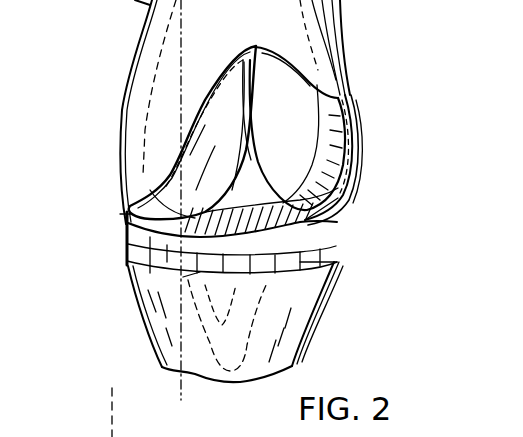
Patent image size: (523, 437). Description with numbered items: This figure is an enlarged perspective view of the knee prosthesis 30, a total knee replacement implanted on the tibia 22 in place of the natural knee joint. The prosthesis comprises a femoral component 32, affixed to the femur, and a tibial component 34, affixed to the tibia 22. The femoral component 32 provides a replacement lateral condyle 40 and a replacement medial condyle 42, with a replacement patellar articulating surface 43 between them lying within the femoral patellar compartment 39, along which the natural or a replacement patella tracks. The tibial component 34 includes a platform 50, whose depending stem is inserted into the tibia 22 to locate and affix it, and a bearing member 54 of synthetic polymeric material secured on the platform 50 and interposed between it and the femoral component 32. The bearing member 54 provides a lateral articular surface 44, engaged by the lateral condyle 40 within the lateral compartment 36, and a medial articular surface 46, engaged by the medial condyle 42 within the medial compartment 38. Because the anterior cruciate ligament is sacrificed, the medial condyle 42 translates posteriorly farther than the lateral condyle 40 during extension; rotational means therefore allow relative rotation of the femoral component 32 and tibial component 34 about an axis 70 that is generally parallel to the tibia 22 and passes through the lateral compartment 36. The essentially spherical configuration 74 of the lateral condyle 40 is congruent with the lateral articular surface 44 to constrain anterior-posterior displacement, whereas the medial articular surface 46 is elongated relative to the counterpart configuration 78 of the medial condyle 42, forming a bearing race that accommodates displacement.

The tibia 22 is at (299, 337).
The knee prosthesis 30 is at (122, 215).
The femoral component 32 is at (204, 128).
The tibial component 34 is at (134, 259).
The lateral compartment 36 is at (125, 230).
The medial compartment 38 is at (302, 260).
The femoral patellar compartment 39 is at (252, 157).
The lateral condyle 40 is at (215, 146).
The medial condyle 42 is at (340, 157).
The patellar articulating surface 43 is at (323, 127).
The lateral articular surface 44 is at (178, 196).
The medial articular surface 46 is at (298, 178).
The platform 50 is at (183, 277).
The bearing member 54 is at (127, 243).
The axis 70 is at (112, 428).
The configuration of the lateral condyle 74 is at (210, 232).
The configuration of the medial condyle 78 is at (312, 226).